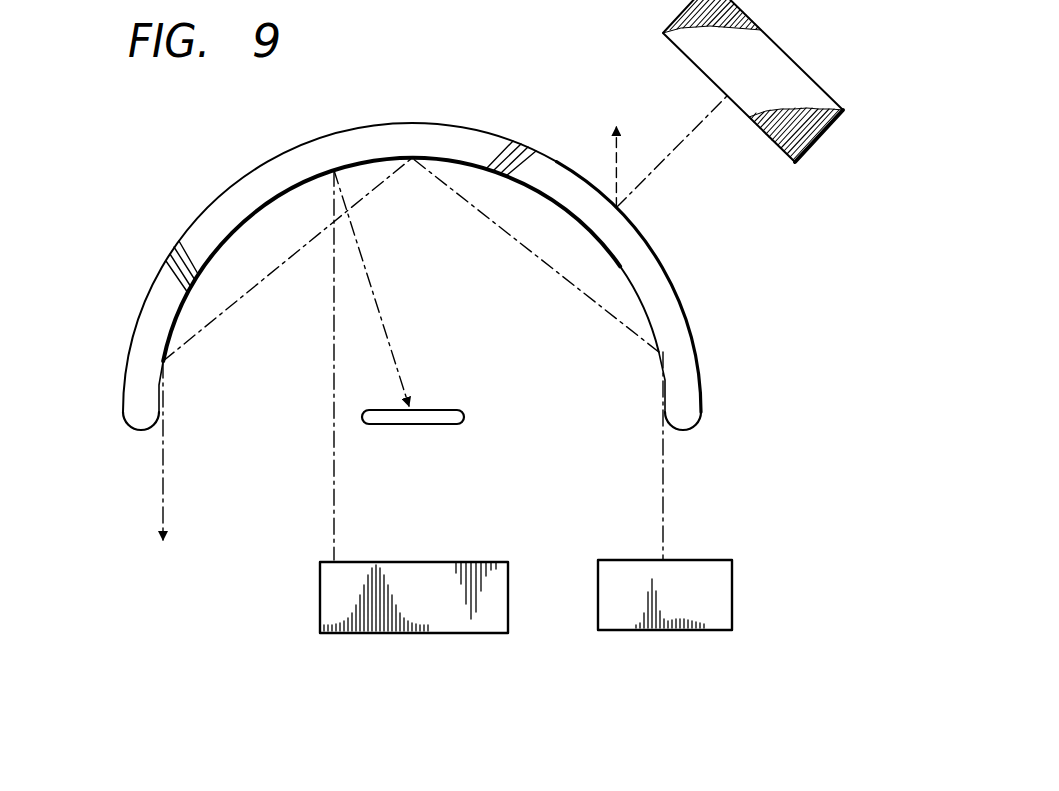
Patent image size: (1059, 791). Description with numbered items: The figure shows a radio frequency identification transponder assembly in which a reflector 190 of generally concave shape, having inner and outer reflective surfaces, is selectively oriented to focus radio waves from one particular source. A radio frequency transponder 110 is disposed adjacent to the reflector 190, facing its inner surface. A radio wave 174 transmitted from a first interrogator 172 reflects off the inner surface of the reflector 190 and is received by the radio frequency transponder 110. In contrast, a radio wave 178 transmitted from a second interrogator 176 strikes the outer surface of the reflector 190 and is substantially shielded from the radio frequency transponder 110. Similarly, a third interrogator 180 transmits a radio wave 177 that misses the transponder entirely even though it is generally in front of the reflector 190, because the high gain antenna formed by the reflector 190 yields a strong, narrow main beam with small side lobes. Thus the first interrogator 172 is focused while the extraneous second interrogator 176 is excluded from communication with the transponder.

The radio frequency transponder 110 is at (442, 410).
The first interrogator 172 is at (443, 562).
The radio wave 174 is at (333, 468).
The second interrogator 176 is at (766, 137).
The radio wave 177 is at (163, 468).
The radio wave 178 is at (683, 140).
The third interrogator 180 is at (733, 587).
The reflector 190 is at (698, 352).